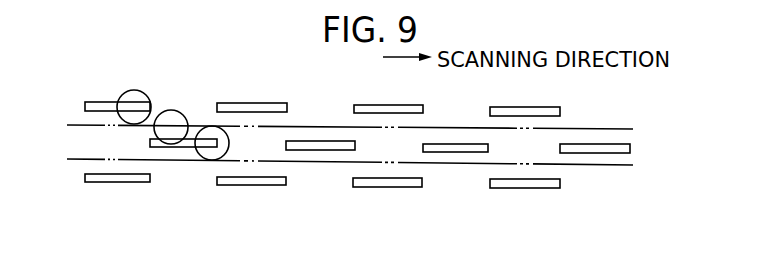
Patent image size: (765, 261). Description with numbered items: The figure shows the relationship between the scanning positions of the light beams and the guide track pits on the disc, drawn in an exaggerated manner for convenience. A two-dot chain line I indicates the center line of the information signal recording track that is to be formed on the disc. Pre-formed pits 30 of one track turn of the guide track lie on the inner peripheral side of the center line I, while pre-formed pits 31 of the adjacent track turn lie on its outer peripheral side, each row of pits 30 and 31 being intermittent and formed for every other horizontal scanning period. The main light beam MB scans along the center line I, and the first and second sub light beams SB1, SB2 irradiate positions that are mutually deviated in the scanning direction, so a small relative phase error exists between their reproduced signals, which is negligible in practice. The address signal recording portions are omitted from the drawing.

The pre-formed pits 30 is at (150, 142).
The pre-formed pits 31 is at (94, 101).
The first sub light beam SB1 is at (137, 90).
The second sub light beam SB2 is at (204, 153).
The main light beam MB is at (175, 111).
The center line of information signal recording track I is at (603, 129).